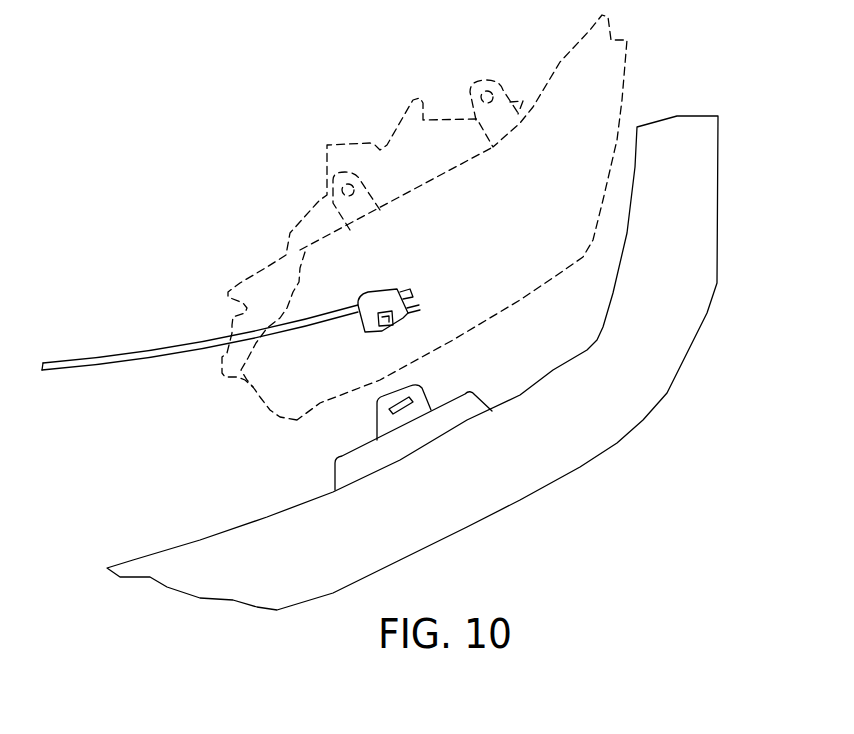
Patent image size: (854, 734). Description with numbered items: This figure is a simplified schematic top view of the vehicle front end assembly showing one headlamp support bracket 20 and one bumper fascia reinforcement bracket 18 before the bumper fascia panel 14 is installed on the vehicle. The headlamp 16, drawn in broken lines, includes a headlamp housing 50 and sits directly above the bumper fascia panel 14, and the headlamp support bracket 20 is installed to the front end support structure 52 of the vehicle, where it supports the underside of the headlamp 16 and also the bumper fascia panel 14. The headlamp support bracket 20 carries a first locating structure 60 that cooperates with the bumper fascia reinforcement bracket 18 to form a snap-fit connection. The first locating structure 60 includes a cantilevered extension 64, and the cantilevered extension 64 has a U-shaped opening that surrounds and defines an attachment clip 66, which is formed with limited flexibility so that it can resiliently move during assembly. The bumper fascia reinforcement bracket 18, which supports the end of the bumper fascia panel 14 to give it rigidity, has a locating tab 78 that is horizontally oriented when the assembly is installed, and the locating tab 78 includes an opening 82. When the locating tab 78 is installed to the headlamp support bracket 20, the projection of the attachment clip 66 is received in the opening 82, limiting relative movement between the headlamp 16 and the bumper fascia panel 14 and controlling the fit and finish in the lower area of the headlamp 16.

The vehicle bumper fascia panel 14 is at (560, 443).
The headlamp 16 is at (556, 80).
The bumper fascia reinforcement bracket 18 is at (470, 410).
The headlamp support bracket 20 is at (379, 300).
The headlamp housing 50 is at (303, 212).
The front end support structure 52 is at (150, 353).
The first locating structure 60 is at (419, 306).
The cantilevered extension 64 is at (403, 320).
The attachment clip 66 is at (387, 327).
The locating tab 78 is at (432, 409).
The opening 82 is at (372, 412).